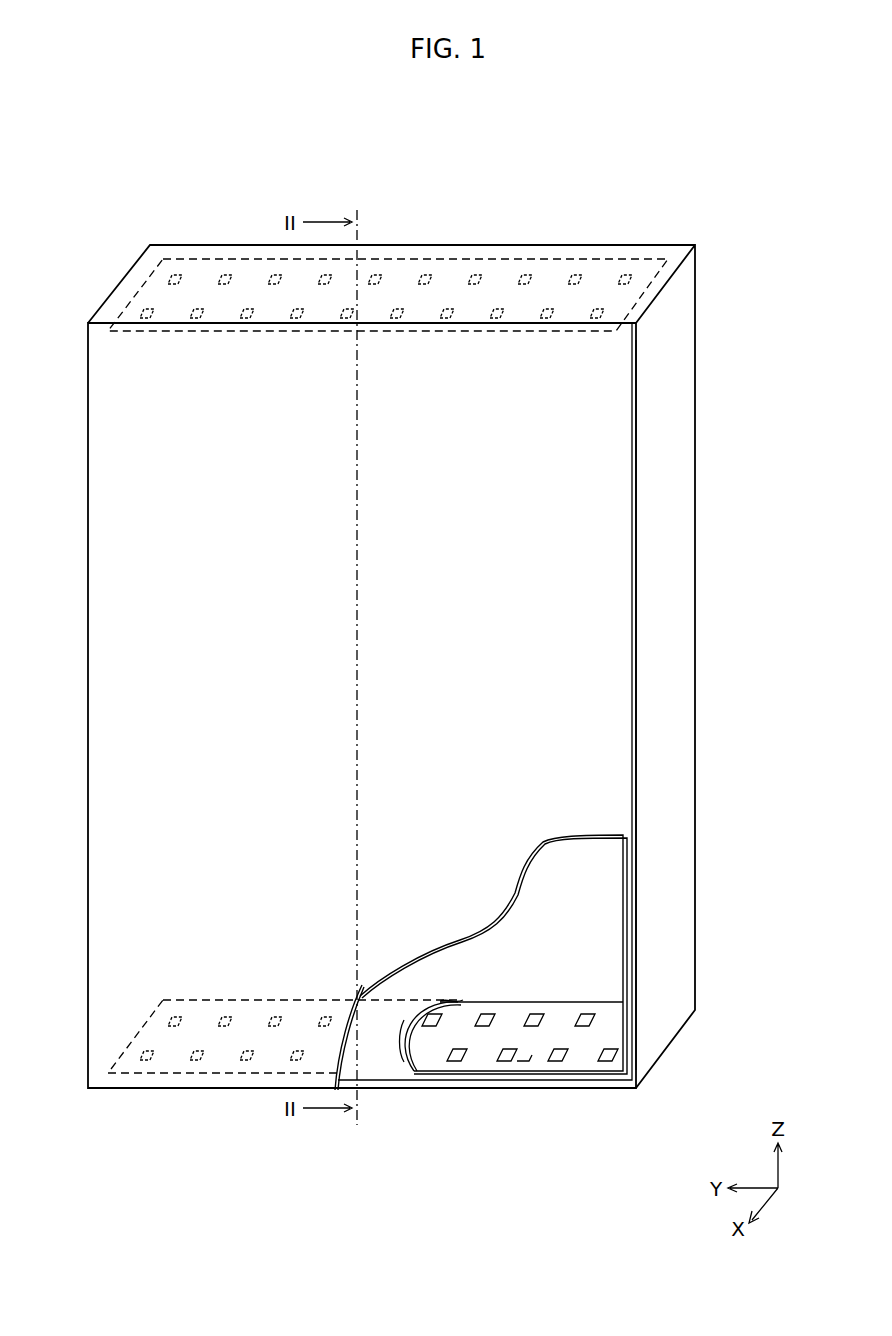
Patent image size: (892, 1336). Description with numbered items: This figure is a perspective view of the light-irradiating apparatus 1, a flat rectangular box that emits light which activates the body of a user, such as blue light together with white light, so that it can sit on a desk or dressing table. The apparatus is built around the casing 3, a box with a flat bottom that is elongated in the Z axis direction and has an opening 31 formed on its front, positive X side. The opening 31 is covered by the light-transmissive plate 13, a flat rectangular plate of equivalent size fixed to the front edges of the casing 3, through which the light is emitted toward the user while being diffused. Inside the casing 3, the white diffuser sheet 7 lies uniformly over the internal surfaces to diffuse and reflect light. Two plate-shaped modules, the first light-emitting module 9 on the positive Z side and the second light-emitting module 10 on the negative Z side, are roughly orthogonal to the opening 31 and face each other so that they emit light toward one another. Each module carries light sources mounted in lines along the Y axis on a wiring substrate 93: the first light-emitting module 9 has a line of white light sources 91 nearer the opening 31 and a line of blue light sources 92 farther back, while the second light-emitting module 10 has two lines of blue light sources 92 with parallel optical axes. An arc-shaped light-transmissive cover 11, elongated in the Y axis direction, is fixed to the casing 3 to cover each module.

The light-irradiating apparatus 1 is at (689, 180).
The casing 3 is at (668, 415).
The light-transmissive plate 13 is at (598, 583).
The second light-emitting module 10 is at (648, 292).
The blue light sources 92 is at (491, 306).
The diffuser sheet 7 is at (580, 860).
The opening 31 is at (630, 952).
The first light-emitting module 9 is at (615, 1012).
The white light sources 91 is at (461, 1060).
The wiring substrates 93 is at (520, 1055).
The light-transmissive cover 11 is at (393, 1055).